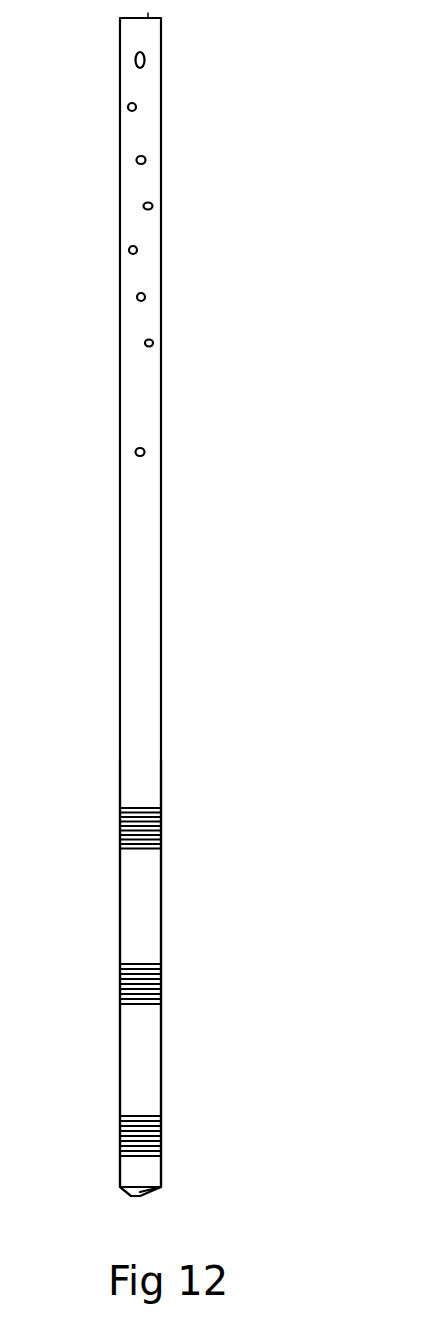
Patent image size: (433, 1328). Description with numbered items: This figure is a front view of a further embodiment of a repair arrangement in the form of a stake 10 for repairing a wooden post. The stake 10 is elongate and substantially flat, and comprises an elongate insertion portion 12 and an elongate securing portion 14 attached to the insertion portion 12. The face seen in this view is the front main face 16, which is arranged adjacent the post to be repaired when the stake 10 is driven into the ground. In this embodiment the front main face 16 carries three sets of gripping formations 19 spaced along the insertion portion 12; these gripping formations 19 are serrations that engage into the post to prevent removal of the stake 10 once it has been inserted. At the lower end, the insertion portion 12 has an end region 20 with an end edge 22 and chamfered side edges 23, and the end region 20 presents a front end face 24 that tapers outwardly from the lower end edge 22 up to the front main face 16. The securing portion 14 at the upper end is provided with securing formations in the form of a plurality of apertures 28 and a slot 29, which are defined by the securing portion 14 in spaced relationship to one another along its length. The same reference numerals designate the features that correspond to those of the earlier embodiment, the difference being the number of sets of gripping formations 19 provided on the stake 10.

The stake 10 is at (187, 275).
The insertion portion 12 is at (163, 910).
The securing portion 14 is at (163, 330).
The front main face 16 is at (140, 592).
The gripping formations 19 is at (145, 822).
The end region 20 is at (133, 1197).
The end edge 22 is at (140, 1197).
The chamfered side edges 23 is at (123, 1195).
The front end face 24 is at (141, 1192).
The apertures 28 is at (146, 158).
The slots 29 is at (145, 58).